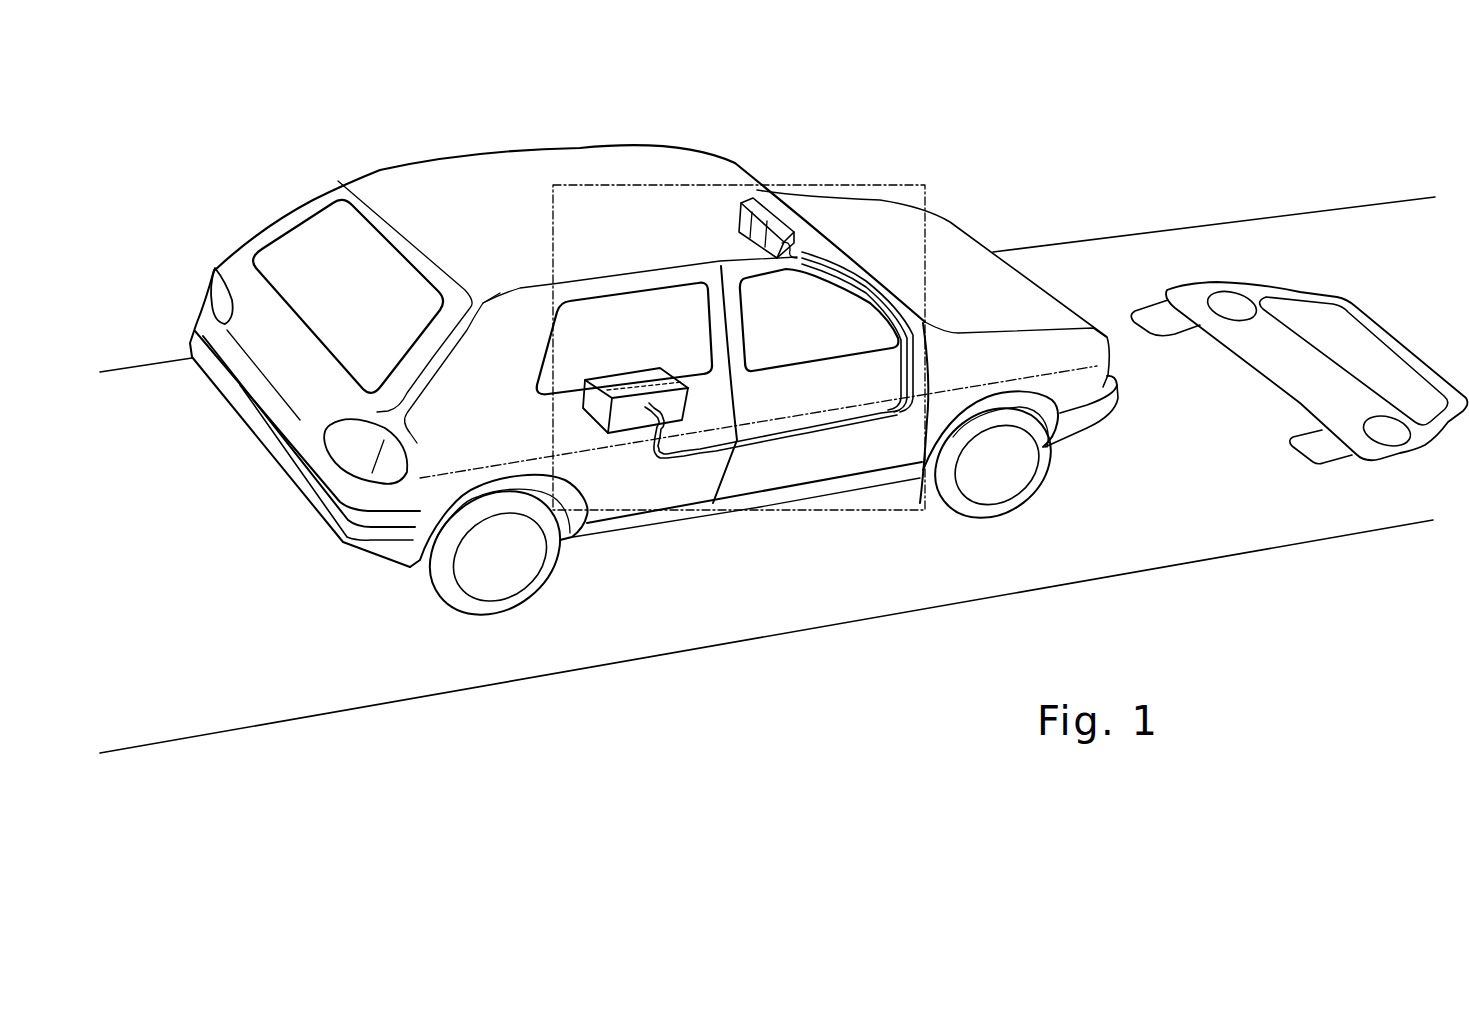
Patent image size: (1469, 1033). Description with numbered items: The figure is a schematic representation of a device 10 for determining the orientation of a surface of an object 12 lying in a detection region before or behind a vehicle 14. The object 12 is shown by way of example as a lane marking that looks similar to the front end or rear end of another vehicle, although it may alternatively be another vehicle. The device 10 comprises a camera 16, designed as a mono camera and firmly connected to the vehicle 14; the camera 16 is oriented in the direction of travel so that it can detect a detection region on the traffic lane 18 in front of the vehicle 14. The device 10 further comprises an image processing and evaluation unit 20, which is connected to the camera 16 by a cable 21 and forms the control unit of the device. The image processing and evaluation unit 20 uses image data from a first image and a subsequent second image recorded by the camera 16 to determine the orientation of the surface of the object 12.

The device 10 is at (822, 526).
The object 12 is at (1377, 289).
The vehicle 14 is at (968, 101).
The camera 16 is at (764, 215).
The traffic lane 18 is at (394, 714).
The image processing and evaluation unit 20 is at (633, 380).
The cable 21 is at (862, 285).